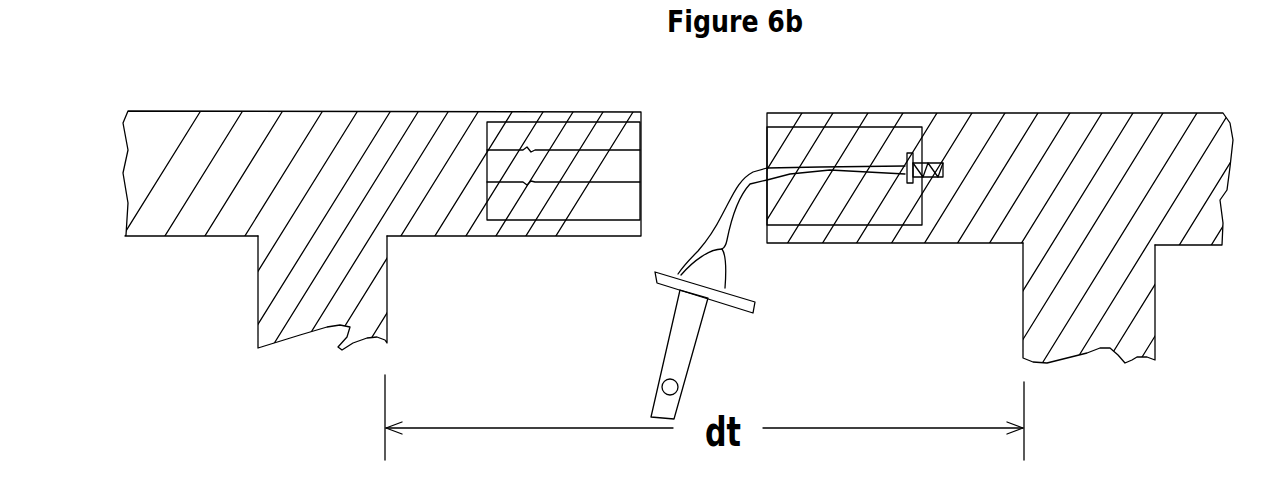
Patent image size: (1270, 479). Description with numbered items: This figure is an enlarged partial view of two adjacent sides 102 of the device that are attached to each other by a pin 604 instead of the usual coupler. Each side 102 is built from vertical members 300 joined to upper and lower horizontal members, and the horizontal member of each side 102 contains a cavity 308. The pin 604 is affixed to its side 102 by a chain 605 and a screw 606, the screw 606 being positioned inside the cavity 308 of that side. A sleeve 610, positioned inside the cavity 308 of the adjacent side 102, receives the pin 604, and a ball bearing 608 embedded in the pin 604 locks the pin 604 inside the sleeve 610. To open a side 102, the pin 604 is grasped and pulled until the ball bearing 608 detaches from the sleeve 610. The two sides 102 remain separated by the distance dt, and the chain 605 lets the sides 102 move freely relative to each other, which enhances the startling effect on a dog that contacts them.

The side 102 is at (296, 96).
The vertical member 300 is at (257, 298).
The cavity 308 is at (580, 211).
The pin 604 is at (655, 284).
The chain 605 is at (738, 178).
The screw 606 is at (930, 163).
The ball bearing 608 is at (676, 384).
The sleeve 610 is at (527, 161).